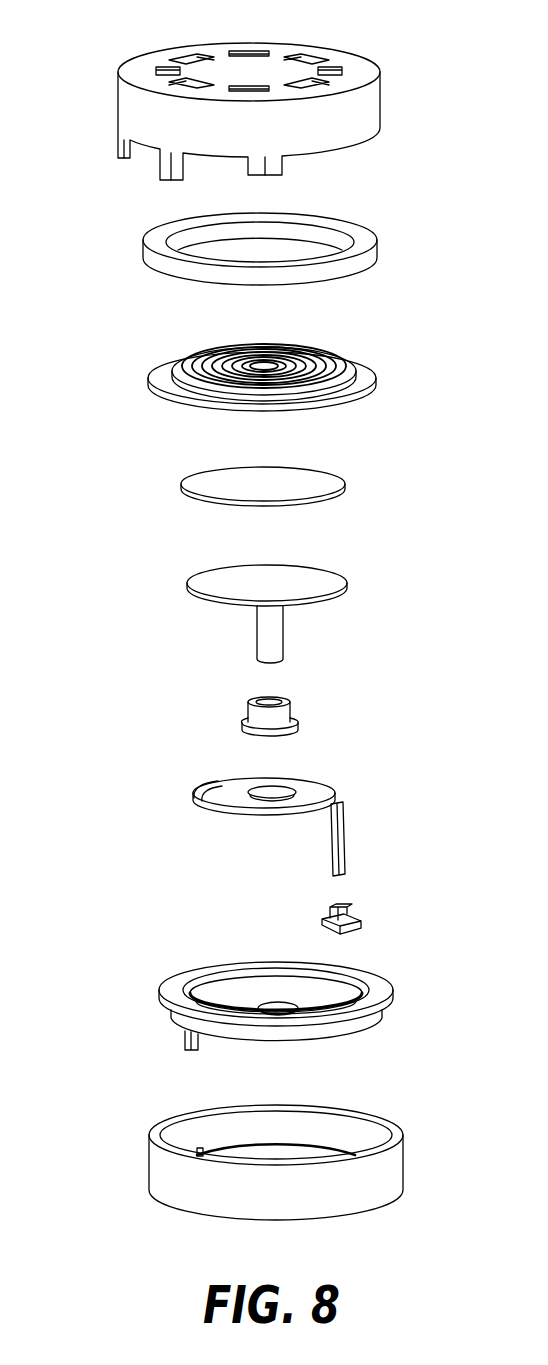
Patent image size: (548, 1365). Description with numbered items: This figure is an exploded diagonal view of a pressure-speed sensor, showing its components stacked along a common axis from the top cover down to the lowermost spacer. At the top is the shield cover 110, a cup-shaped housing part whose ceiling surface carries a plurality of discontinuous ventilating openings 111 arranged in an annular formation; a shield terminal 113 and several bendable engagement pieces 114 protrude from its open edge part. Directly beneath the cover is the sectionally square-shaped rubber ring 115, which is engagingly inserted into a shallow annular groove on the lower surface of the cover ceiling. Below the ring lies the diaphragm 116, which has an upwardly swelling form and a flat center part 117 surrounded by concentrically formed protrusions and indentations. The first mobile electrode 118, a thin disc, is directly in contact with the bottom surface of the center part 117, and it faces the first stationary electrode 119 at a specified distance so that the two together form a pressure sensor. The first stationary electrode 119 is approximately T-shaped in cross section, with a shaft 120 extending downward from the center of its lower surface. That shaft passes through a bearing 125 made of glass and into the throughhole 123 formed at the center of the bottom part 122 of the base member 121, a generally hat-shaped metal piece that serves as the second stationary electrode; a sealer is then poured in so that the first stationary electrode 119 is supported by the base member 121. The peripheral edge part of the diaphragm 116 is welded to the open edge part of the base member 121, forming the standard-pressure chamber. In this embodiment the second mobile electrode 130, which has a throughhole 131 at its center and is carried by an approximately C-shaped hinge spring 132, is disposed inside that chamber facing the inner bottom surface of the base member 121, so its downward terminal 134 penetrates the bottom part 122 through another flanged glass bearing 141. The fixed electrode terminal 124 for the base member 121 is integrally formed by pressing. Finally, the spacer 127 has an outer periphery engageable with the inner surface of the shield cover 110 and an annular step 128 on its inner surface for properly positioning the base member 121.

The shield cover 110 is at (368, 106).
The ventilating openings 111 is at (183, 60).
The shield terminal 113 is at (160, 172).
The bendable engagement pieces 114 is at (118, 140).
The rubber ring 115 is at (366, 242).
The diaphragm 116 is at (366, 378).
The center part 117 is at (250, 365).
The first mobile electrode 118 is at (335, 490).
The first stationary electrode 119 is at (330, 580).
The shaft 120 is at (284, 640).
The bearing 125 is at (292, 710).
The second mobile electrode 130 is at (330, 790).
The throughhole 131 is at (262, 792).
The hinge spring 132 is at (200, 800).
The terminal 134 is at (345, 838).
The bearing 141 is at (360, 922).
The base member 121 is at (385, 990).
The bottom part 122 is at (200, 990).
The throughhole 123 is at (278, 1005).
The fixed electrode terminal 124 is at (186, 1040).
The spacer 127 is at (393, 1177).
The annular step 128 is at (356, 1150).